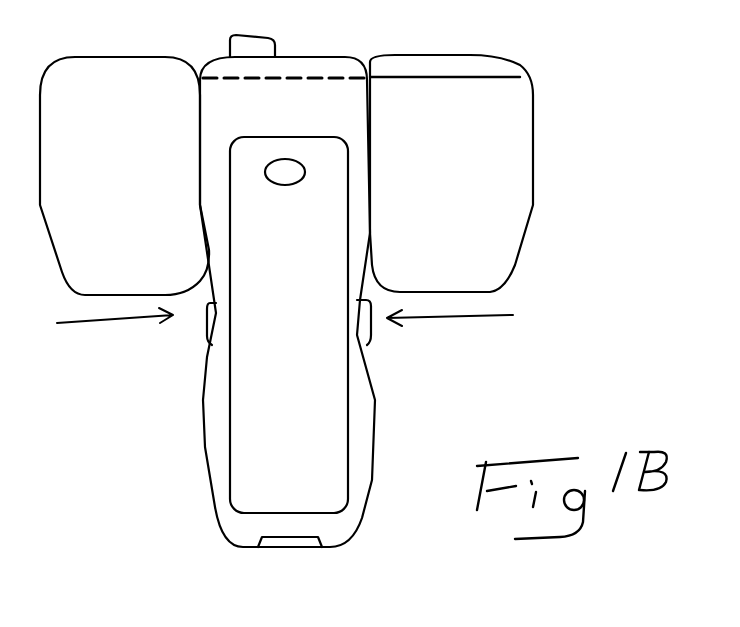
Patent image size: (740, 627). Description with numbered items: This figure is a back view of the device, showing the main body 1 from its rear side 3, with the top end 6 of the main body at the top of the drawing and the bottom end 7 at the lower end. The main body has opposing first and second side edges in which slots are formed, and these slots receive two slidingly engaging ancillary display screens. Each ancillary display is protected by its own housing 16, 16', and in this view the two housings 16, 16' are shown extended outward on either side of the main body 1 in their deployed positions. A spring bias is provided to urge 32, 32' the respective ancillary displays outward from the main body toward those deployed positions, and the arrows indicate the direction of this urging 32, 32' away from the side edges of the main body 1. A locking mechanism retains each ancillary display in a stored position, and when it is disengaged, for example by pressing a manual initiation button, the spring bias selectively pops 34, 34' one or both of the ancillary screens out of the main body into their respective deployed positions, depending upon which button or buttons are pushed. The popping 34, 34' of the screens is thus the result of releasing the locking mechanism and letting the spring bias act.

The main body 1 is at (295, 428).
The rear side 3 is at (313, 370).
The top end 6 is at (307, 58).
The bottom end 7 is at (303, 552).
The housing 16 is at (451, 173).
The housing 16' is at (124, 176).
The urging direction 32 is at (460, 339).
The urging direction 32' is at (115, 351).
The popping action 34 is at (139, 601).
The popping action 34' is at (465, 602).